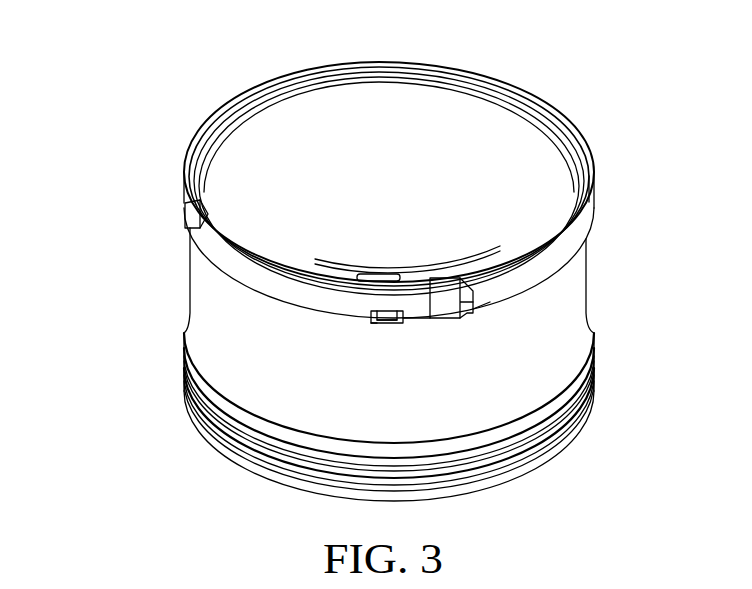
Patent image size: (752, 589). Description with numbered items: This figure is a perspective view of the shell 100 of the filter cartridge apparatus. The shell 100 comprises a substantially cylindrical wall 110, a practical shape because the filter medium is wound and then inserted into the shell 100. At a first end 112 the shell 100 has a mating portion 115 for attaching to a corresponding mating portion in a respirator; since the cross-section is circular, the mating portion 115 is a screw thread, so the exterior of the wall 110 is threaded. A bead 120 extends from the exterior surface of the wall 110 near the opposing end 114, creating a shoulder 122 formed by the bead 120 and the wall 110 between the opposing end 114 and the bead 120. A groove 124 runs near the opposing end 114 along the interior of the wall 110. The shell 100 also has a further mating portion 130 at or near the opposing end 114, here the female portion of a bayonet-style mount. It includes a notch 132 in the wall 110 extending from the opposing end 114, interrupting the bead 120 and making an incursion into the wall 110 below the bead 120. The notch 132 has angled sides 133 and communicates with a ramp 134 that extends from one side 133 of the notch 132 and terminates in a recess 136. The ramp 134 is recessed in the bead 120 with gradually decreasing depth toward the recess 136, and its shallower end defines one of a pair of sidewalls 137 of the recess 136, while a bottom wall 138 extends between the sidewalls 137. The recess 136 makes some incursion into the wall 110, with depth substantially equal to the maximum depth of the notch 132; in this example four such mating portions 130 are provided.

The shell 100 is at (136, 53).
The wall 110 is at (212, 312).
The first end 112 is at (223, 455).
The opposing end 114 is at (193, 185).
The mating portion 115 is at (187, 398).
The bead 120 is at (573, 240).
The shoulder 122 is at (595, 178).
The groove 124 is at (262, 78).
The further mating portion 130 is at (190, 213).
The notch 132 is at (448, 308).
The angled sides 133 is at (458, 290).
The ramp 134 is at (423, 320).
The recess 136 is at (393, 323).
The sidewalls 137 is at (397, 316).
The bottom wall 138 is at (385, 326).